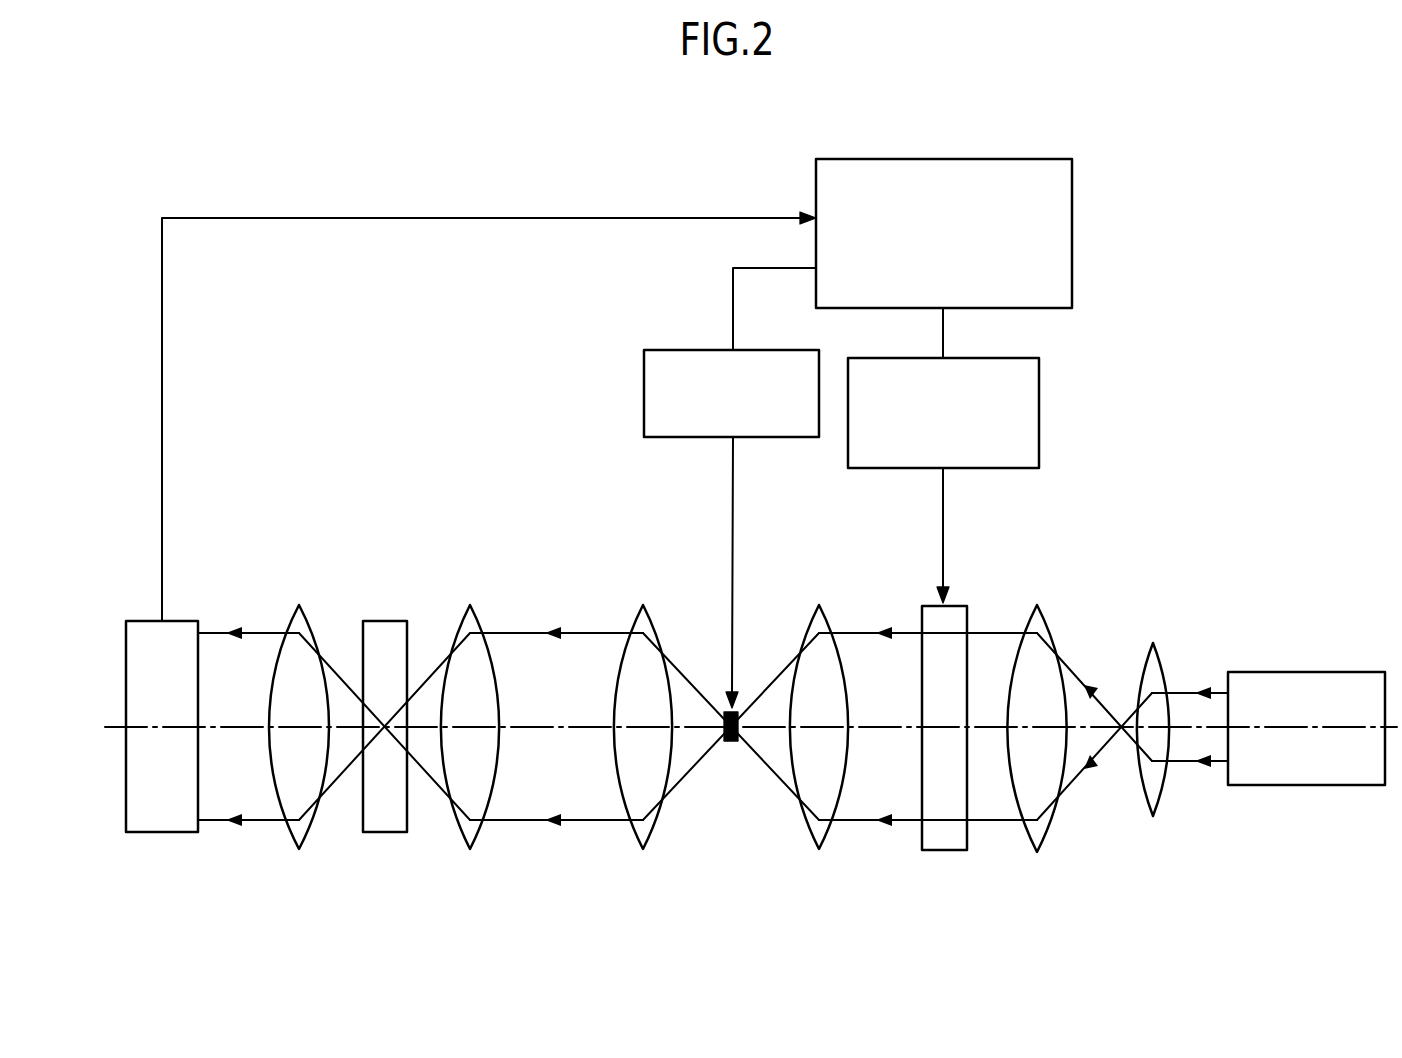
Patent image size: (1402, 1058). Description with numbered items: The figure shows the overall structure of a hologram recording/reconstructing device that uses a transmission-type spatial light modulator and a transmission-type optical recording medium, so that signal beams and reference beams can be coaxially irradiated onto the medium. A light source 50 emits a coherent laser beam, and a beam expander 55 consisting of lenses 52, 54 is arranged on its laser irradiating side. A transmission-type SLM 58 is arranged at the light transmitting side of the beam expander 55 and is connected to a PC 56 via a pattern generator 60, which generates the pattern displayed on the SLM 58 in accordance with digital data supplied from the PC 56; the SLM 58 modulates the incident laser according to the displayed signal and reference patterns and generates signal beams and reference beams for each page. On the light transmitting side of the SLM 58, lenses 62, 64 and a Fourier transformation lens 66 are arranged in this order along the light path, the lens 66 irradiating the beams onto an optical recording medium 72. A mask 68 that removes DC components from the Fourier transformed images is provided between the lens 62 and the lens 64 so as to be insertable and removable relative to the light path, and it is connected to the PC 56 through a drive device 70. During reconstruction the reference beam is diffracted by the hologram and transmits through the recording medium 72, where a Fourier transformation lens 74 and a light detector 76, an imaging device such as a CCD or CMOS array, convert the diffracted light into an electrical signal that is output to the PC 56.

The light source 50 is at (1310, 672).
The lens 52 is at (1153, 643).
The lens 54 is at (1038, 605).
The beam expander 55 is at (1028, 513).
The PC 56 is at (1072, 228).
The transmission-type SLM 58 is at (945, 850).
The pattern generator 60 is at (1039, 407).
The lens 62 is at (820, 605).
The lens 64 is at (643, 605).
The Fourier transformation lens 66 is at (470, 605).
The mask 68 is at (731, 742).
The drive device 70 is at (660, 350).
The optical recording medium 72 is at (387, 621).
The Fourier transformation lens 74 is at (300, 605).
The light detector 76 is at (160, 832).